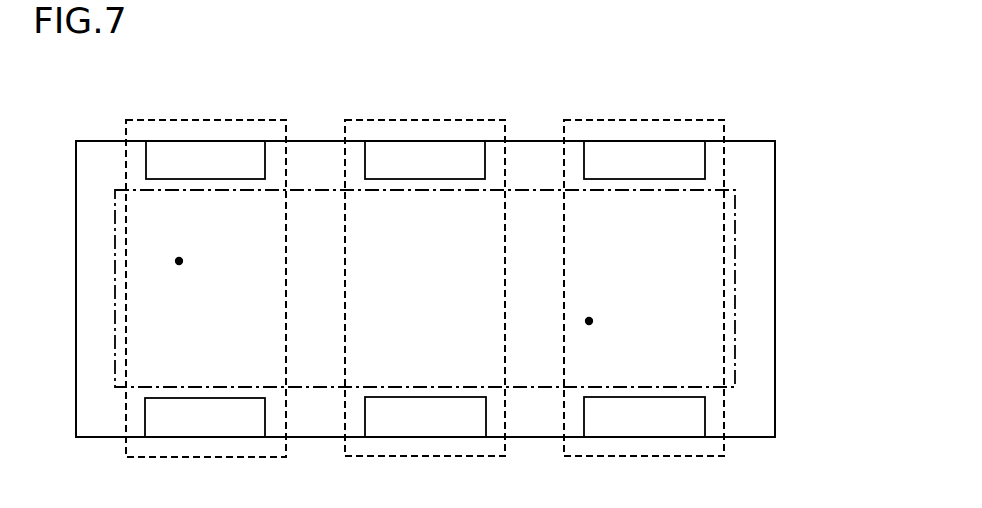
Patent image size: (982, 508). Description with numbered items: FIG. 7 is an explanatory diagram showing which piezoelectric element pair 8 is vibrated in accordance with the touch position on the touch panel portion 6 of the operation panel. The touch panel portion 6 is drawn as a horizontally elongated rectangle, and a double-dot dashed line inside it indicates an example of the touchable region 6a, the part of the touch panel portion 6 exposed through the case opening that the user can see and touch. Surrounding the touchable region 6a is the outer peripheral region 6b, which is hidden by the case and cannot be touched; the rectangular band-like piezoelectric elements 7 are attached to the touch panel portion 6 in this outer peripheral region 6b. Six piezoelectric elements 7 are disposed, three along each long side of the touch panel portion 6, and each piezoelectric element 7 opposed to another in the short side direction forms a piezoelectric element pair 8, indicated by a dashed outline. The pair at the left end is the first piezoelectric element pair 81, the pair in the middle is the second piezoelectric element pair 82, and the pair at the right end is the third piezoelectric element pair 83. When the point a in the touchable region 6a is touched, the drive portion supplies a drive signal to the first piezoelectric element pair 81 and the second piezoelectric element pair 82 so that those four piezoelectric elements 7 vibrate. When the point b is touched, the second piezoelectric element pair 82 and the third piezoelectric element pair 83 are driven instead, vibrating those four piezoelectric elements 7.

The touch panel portion 6 is at (765, 150).
The touchable region 6a is at (676, 277).
The outer peripheral region 6b is at (756, 407).
The piezoelectric element 7 is at (255, 150).
The piezoelectric element pair 8 is at (425, 259).
The first piezoelectric element pair 81 is at (207, 120).
The second piezoelectric element pair 82 is at (425, 120).
The third piezoelectric element pair 83 is at (645, 120).
The point a is at (191, 261).
The point b is at (598, 322).